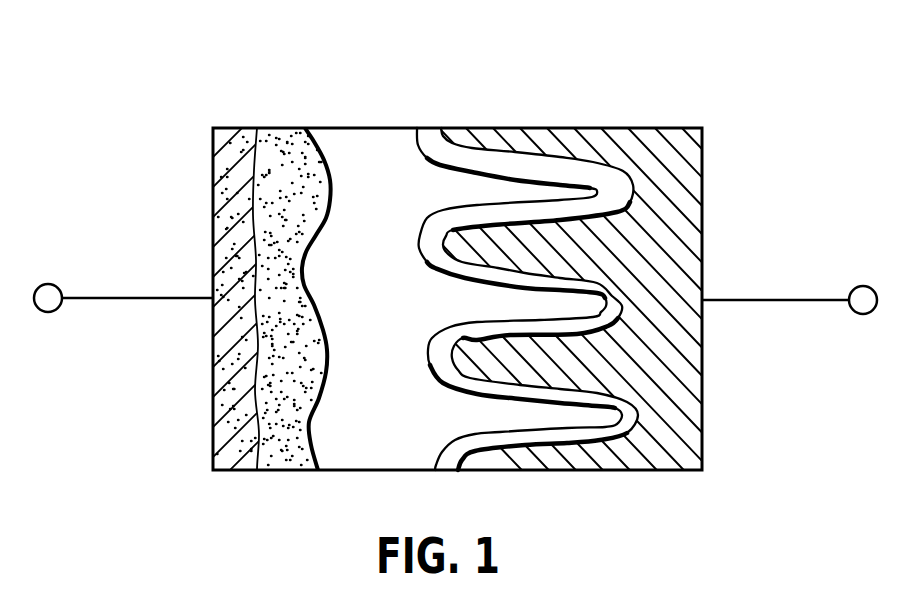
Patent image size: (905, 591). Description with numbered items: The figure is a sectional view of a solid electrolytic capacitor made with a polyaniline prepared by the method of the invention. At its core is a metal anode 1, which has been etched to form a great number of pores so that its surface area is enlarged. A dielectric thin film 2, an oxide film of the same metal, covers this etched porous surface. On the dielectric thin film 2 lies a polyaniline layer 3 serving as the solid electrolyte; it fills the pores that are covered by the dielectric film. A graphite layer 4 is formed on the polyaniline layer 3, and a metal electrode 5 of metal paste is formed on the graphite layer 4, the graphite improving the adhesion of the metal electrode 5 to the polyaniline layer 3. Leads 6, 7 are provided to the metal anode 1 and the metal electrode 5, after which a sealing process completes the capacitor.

The metal anode 1 is at (579, 486).
The dielectric thin film 2 is at (468, 128).
The polyaniline layer 3 is at (380, 143).
The graphite layer 4 is at (285, 137).
The metal electrode 5 is at (231, 143).
The lead terminal 6 is at (125, 298).
The lead terminal 7 is at (760, 300).